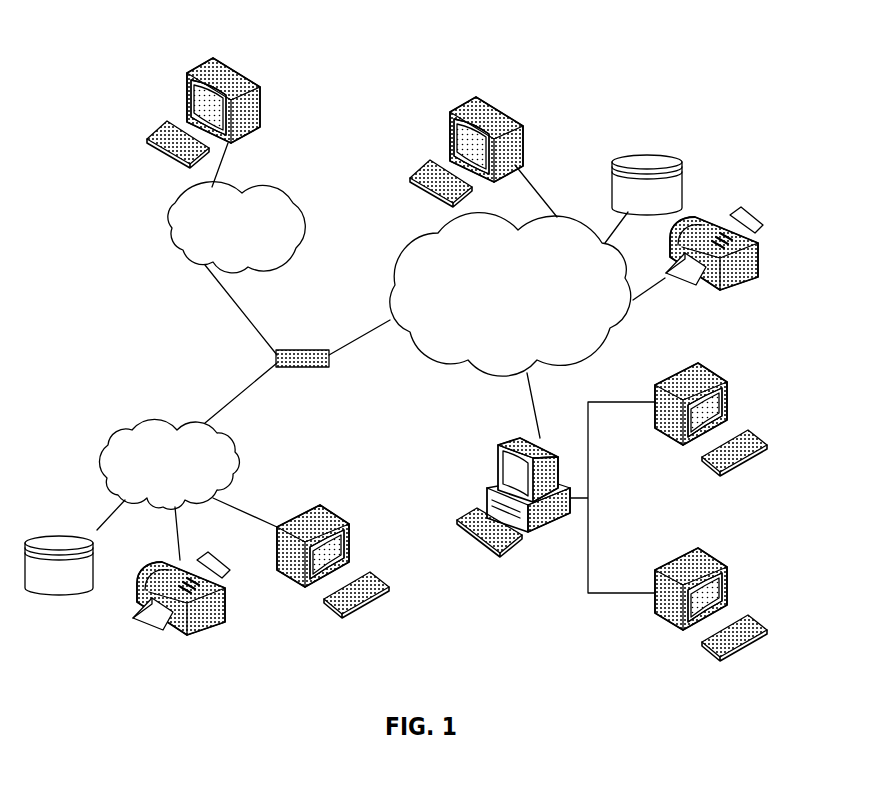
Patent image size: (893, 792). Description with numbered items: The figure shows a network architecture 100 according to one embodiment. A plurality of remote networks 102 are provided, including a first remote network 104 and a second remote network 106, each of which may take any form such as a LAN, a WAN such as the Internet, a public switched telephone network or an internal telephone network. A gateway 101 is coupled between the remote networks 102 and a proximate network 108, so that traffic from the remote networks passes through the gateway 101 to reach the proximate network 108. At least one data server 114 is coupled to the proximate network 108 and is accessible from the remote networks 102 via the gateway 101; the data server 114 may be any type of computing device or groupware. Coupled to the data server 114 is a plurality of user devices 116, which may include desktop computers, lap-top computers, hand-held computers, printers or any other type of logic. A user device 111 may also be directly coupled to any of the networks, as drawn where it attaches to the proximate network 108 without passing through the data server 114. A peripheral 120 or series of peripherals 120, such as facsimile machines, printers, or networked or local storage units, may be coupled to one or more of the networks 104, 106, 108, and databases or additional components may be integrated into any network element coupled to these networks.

The architecture 100 is at (138, 45).
The gateway 101 is at (285, 350).
The remote networks 102 is at (158, 275).
The first remote network 104 is at (110, 443).
The second remote network 106 is at (293, 203).
The proximate network 108 is at (598, 352).
The user device 111 is at (523, 122).
The data server 114 is at (497, 458).
The user devices 116 is at (261, 91).
The peripheral 120 is at (682, 162).